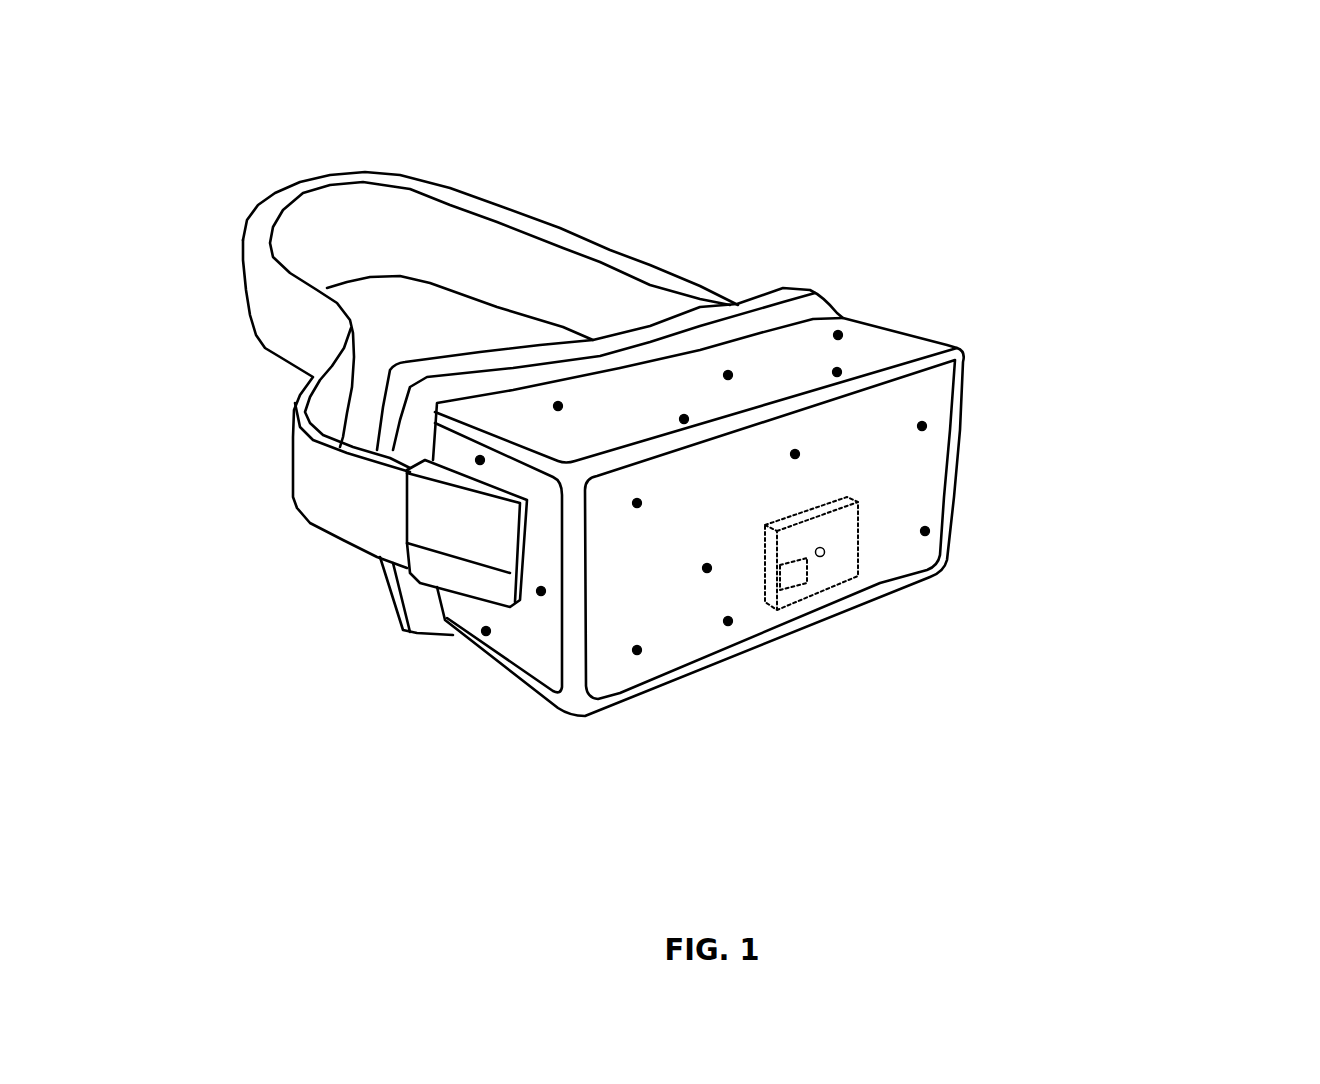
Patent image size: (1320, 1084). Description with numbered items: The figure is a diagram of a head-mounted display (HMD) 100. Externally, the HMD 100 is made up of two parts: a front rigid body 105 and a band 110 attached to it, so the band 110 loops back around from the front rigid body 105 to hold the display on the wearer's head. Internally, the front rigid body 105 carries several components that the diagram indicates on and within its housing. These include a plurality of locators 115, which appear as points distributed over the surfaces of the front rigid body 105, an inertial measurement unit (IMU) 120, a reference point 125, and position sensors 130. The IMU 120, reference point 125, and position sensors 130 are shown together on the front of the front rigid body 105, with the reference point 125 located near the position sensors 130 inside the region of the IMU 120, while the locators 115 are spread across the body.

The head-mounted display 100 is at (127, 62).
The front rigid body 105 is at (959, 345).
The band 110 is at (609, 250).
The locators 115 is at (925, 530).
The inertial measurement unit 120 is at (858, 550).
The reference point 125 is at (825, 558).
The position sensors 130 is at (793, 577).